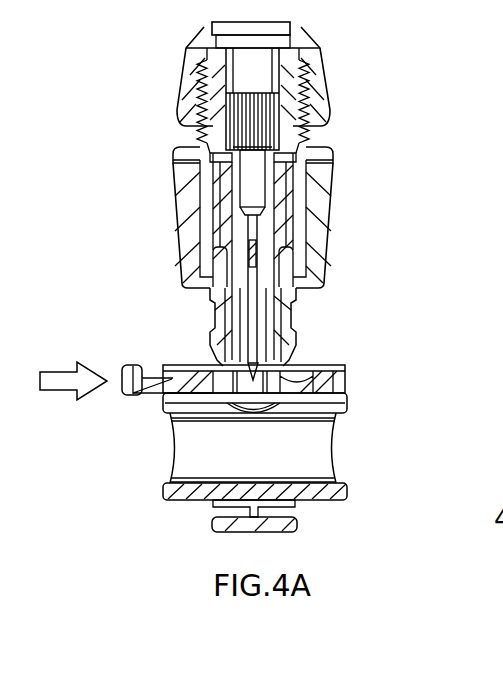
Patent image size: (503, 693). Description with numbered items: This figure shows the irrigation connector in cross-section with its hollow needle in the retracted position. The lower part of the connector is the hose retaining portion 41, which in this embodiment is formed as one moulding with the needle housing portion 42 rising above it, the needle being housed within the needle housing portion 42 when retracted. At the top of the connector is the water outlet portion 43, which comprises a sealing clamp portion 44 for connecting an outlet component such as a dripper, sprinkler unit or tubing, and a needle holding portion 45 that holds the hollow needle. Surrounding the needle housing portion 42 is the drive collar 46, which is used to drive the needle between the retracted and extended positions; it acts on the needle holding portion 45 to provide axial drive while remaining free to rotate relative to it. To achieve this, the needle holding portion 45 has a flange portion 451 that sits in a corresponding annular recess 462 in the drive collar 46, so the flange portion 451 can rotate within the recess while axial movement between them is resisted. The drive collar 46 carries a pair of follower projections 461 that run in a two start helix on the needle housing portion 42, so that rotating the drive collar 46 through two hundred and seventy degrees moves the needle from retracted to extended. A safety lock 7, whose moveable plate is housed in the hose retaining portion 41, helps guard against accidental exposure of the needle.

The hose retaining portion 41 is at (306, 441).
The needle housing portion 42 is at (297, 330).
The water outlet portion 43 is at (200, 82).
The sealing clamp portion 44 is at (280, 102).
The needle holding portion 45 is at (268, 222).
The flange portion 451 is at (303, 137).
The drive collar 46 is at (183, 205).
The follower projections 461 is at (192, 268).
The annular recess 462 is at (168, 157).
The safety lock 7 is at (133, 405).